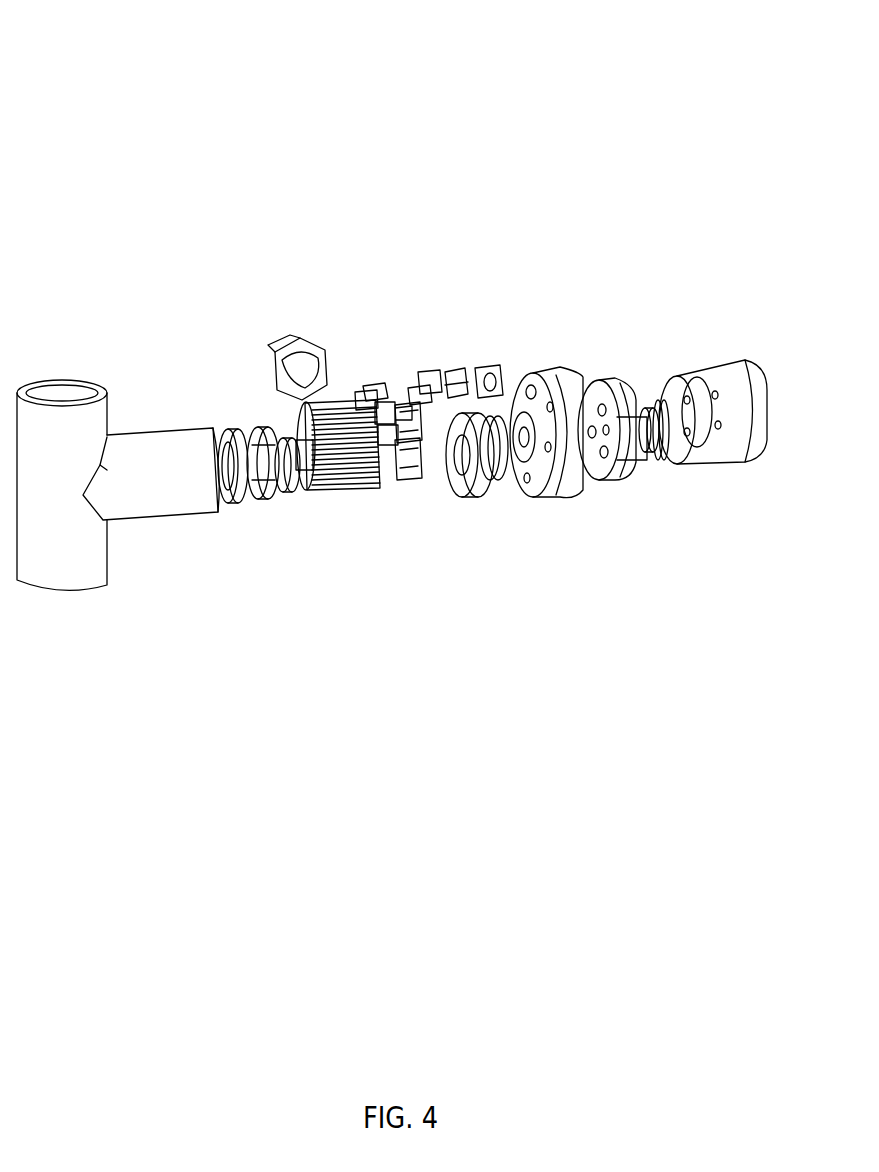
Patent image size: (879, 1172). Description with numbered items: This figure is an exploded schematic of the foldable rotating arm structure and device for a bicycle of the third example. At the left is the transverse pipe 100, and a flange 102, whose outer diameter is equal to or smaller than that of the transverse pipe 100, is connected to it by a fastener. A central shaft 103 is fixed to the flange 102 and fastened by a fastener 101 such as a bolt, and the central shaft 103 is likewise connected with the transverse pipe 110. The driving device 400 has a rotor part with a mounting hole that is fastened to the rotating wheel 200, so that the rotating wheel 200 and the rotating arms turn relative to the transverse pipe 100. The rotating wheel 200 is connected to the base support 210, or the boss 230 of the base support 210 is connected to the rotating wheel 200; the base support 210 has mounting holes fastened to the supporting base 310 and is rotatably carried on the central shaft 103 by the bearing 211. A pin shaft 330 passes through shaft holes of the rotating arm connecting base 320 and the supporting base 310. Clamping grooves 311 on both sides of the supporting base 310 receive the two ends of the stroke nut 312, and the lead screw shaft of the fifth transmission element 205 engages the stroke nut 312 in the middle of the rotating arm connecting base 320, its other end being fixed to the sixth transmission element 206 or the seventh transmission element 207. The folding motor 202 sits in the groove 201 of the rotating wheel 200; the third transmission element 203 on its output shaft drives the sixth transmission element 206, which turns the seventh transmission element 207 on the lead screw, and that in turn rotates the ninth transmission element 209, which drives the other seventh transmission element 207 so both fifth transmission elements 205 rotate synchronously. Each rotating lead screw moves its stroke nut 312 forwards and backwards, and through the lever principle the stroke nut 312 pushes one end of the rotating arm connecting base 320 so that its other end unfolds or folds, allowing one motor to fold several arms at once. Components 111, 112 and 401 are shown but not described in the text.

The transverse pipe 100 is at (137, 480).
The fastener 101 is at (230, 470).
The flange 102 is at (262, 457).
The central shaft 103 is at (287, 463).
The transverse pipe 110 is at (743, 430).
The ring 111 is at (658, 413).
The spacer ring 112 is at (625, 447).
The rotating wheel 200 is at (467, 363).
The groove 201 is at (483, 378).
The folding motor 202 is at (453, 380).
The third transmission element 203 is at (423, 380).
The fifth transmission element 205 is at (405, 407).
The sixth transmission element 206 is at (418, 393).
The seventh transmission element 207 is at (465, 423).
The ninth transmission element 209 is at (482, 427).
The base support 210 is at (303, 452).
The bearing 211 is at (365, 397).
The boss 230 is at (405, 450).
The supporting base 310 is at (383, 420).
The clamping groove 311 is at (377, 413).
The stroke nut 312 is at (372, 392).
The rotating arm connecting base 320 is at (300, 372).
The pin shaft 330 is at (353, 393).
The driving device 400 is at (565, 437).
The pin 401 is at (527, 387).